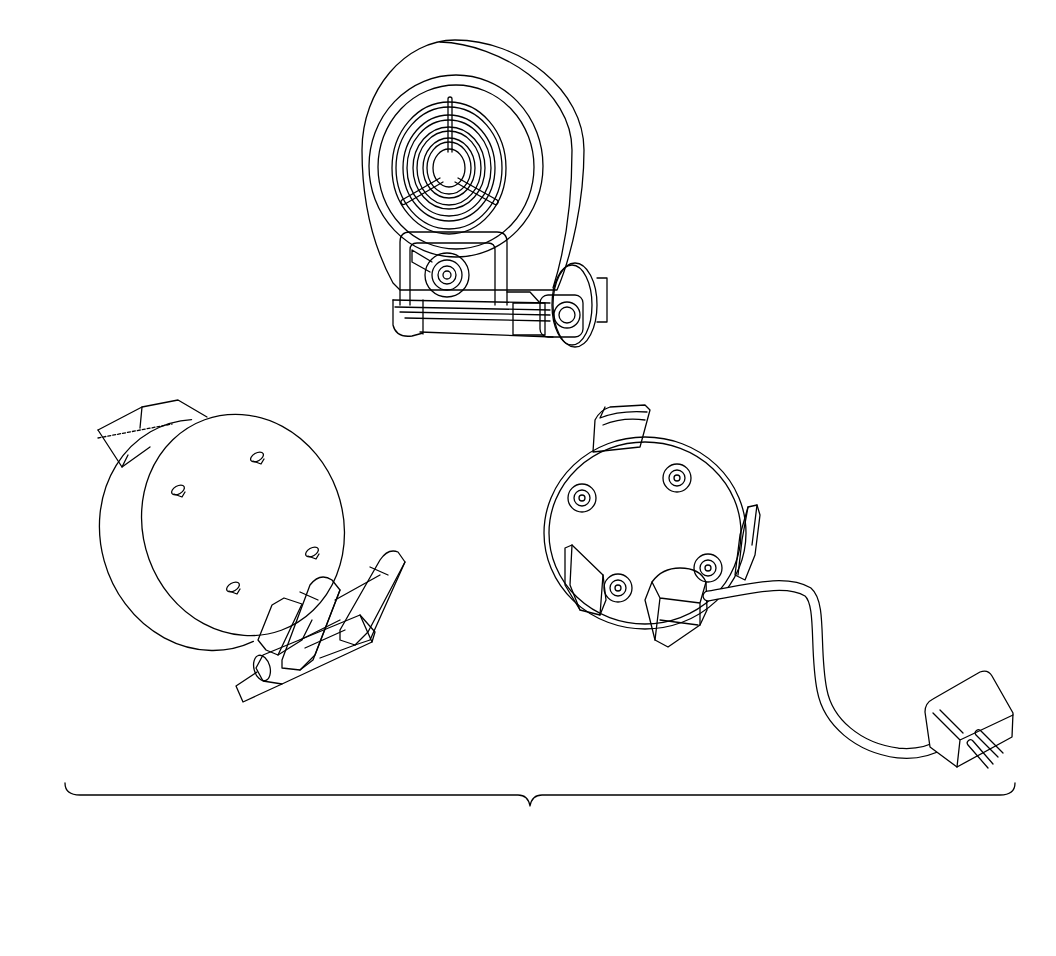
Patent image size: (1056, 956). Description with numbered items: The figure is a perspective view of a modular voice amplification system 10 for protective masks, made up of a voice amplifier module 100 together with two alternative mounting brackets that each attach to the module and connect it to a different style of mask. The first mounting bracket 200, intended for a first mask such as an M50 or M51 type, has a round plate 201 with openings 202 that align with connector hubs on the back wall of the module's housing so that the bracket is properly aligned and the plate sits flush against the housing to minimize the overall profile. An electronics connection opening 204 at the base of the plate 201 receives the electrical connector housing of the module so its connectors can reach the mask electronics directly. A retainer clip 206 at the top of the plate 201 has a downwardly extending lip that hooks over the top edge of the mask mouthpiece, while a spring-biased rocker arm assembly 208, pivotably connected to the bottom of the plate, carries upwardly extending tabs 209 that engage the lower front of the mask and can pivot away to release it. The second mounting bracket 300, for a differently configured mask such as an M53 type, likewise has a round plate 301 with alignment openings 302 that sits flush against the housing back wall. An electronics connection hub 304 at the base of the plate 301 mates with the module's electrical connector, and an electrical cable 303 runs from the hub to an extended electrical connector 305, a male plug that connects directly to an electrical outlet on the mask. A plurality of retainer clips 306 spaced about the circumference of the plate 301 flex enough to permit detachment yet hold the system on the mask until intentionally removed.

The modular voice amplification system 10 is at (705, 233).
The voice amplifier module 100 is at (572, 112).
The first mounting bracket 200 is at (315, 442).
The round plate 201 is at (150, 555).
The openings 202 is at (257, 452).
The electronics connection opening 204 is at (278, 612).
The retainer clip 206 is at (120, 428).
The rocker arm assembly 208 is at (372, 605).
The upwardly extending tabs 209 is at (238, 700).
The second mounting bracket 300 is at (780, 473).
The round plate 301 is at (672, 440).
The openings 302 is at (690, 476).
The electrical cable 303 is at (800, 592).
The electronics connection hub 304 is at (683, 652).
The extended electrical connector 305 is at (968, 688).
The retainer clips 306 is at (640, 402).